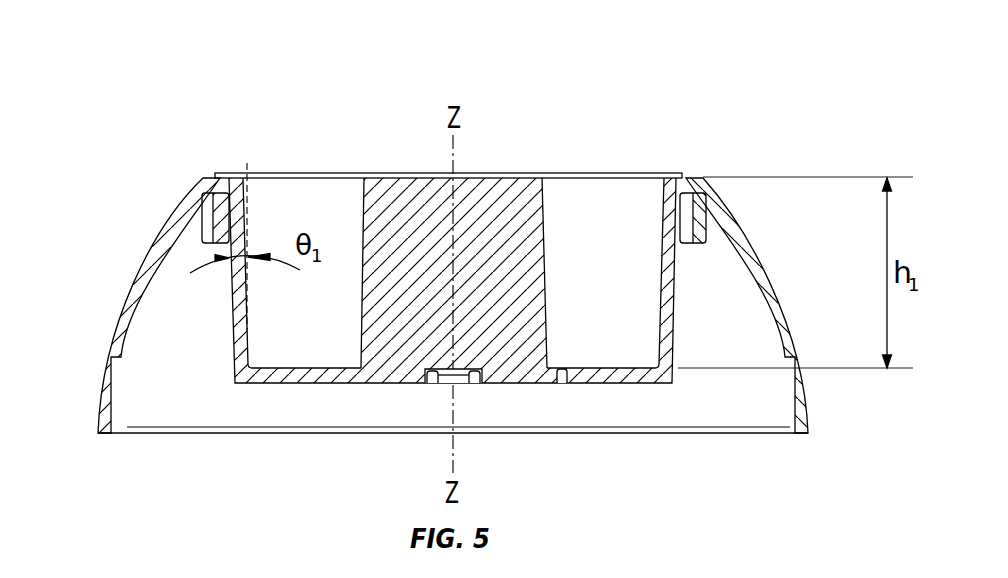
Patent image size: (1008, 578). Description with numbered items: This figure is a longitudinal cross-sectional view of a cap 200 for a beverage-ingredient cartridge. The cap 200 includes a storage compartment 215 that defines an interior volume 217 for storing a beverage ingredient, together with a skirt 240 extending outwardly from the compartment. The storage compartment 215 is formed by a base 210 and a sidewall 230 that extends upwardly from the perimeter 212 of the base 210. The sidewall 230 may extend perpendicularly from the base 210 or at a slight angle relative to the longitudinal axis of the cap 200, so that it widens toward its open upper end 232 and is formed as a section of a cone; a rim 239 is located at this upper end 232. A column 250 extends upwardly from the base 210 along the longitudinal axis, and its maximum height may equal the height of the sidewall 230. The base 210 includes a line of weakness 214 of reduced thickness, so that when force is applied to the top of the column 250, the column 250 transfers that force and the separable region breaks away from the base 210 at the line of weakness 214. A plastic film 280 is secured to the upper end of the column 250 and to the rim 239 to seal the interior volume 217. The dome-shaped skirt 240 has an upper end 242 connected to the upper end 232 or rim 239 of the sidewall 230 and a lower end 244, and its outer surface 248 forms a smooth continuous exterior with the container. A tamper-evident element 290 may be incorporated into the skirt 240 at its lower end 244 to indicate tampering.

The cap 200 is at (290, 122).
The base 210 is at (610, 373).
The perimeter 212 is at (672, 378).
The line of weakness 214 is at (467, 390).
The storage compartment 215 is at (236, 300).
The interior volume 217 is at (272, 219).
The sidewall 230 is at (665, 297).
The upper end 232 is at (668, 233).
The rim 239 is at (672, 175).
The skirt 240 is at (723, 207).
The upper end 242 is at (219, 174).
The lower end 244 is at (802, 430).
The outer surface 248 is at (763, 265).
The column 250 is at (540, 215).
The plastic film 280 is at (333, 173).
The tamper-evident element 290 is at (100, 415).